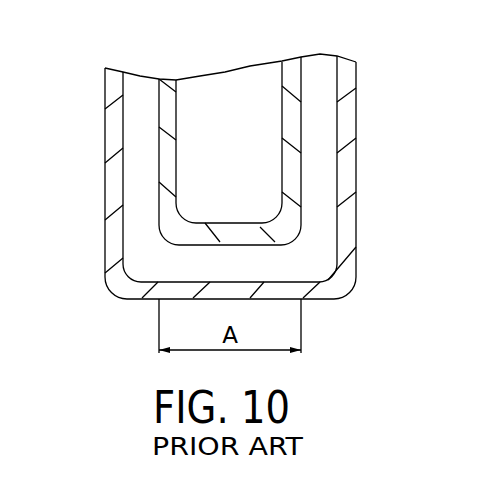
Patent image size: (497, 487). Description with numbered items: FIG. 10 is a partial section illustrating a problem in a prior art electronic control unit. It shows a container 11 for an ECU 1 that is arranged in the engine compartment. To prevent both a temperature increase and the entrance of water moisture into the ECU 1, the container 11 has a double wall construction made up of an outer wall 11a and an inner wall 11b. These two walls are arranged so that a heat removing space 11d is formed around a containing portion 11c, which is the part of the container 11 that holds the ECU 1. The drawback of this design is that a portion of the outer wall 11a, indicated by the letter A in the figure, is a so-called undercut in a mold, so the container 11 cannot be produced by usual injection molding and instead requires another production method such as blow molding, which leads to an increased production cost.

The ECU 1 is at (207, 82).
The container 11 is at (362, 142).
The outer wall 11a is at (352, 150).
The inner wall 11b is at (162, 172).
The containing portion 11c is at (283, 94).
The heat removing space 11d is at (323, 217).